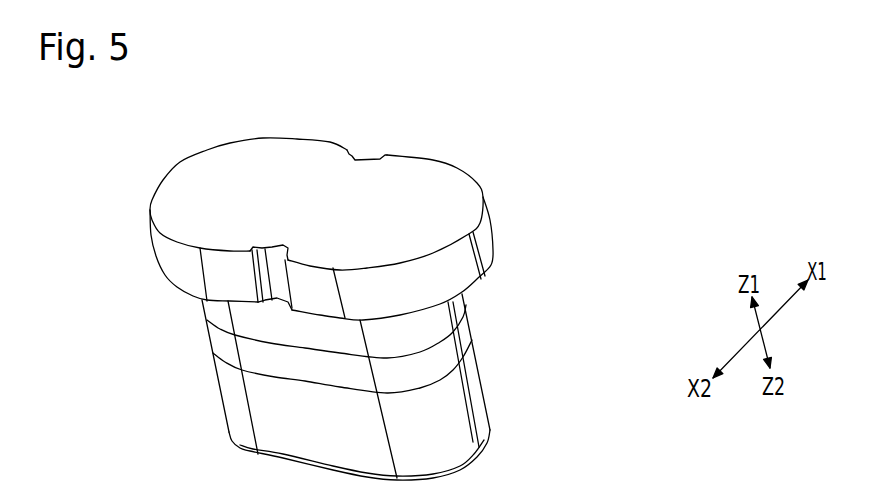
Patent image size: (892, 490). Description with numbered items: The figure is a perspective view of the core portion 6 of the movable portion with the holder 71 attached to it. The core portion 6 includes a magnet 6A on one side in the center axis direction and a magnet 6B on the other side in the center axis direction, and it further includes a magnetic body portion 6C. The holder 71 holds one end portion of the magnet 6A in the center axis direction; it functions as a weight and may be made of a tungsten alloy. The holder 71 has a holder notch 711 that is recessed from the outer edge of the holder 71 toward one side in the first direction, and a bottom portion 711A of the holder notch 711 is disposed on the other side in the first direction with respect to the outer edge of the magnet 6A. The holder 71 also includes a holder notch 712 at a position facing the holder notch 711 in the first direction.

The holder 71 is at (293, 205).
The holder notch 711 is at (252, 284).
The bottom portion 711A is at (265, 249).
The holder notch 712 is at (385, 157).
The core portion 6 is at (427, 375).
The magnet 6A is at (463, 308).
The magnetic body portion 6C is at (463, 340).
The magnet 6B is at (413, 413).